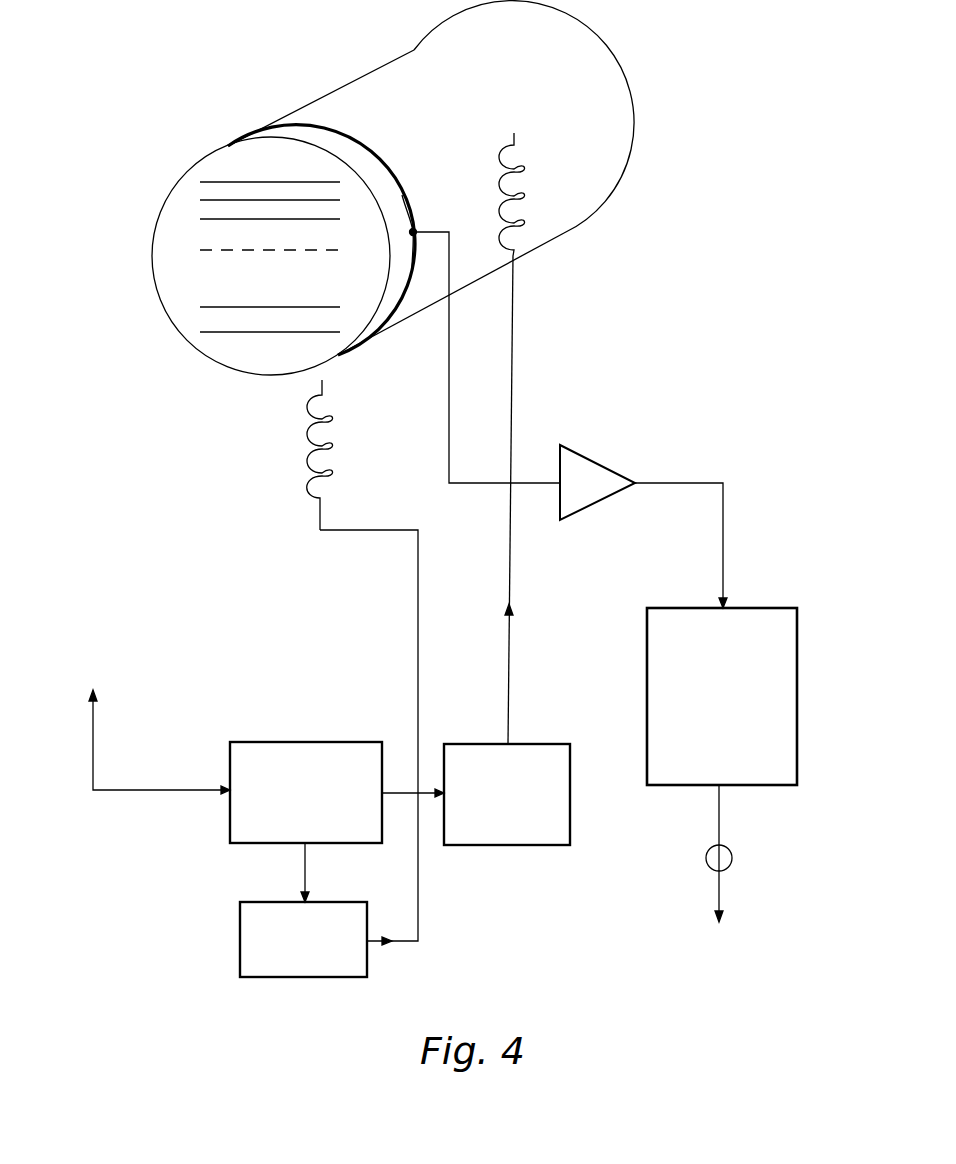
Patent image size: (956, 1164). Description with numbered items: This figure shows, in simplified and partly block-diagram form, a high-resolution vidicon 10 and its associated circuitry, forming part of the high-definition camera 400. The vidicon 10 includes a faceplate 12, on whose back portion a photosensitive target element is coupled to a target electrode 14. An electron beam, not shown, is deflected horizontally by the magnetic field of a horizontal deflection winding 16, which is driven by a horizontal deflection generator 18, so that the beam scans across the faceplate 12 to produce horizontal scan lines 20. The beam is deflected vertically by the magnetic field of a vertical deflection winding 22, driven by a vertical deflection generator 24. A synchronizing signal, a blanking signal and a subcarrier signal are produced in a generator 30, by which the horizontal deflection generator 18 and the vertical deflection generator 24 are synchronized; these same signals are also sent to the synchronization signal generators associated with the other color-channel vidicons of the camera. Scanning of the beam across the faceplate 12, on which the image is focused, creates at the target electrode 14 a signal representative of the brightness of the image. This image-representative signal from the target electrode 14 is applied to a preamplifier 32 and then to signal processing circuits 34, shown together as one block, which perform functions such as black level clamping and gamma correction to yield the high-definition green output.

The high-definition camera 400 is at (593, 338).
The vidicon 10 is at (649, 254).
The faceplate 12 is at (158, 272).
The target electrode 14 is at (413, 250).
The horizontal deflection winding 16 is at (516, 196).
The horizontal deflection generator 18 is at (548, 744).
The horizontal scan lines 20 is at (152, 143).
The vertical deflection winding 22 is at (326, 468).
The vertical deflection generator 24 is at (240, 940).
The synchronizing, blanking and subcarrier signal generator 30 is at (230, 823).
The preamplifier 32 is at (584, 517).
The signal processing circuits 34 is at (668, 608).